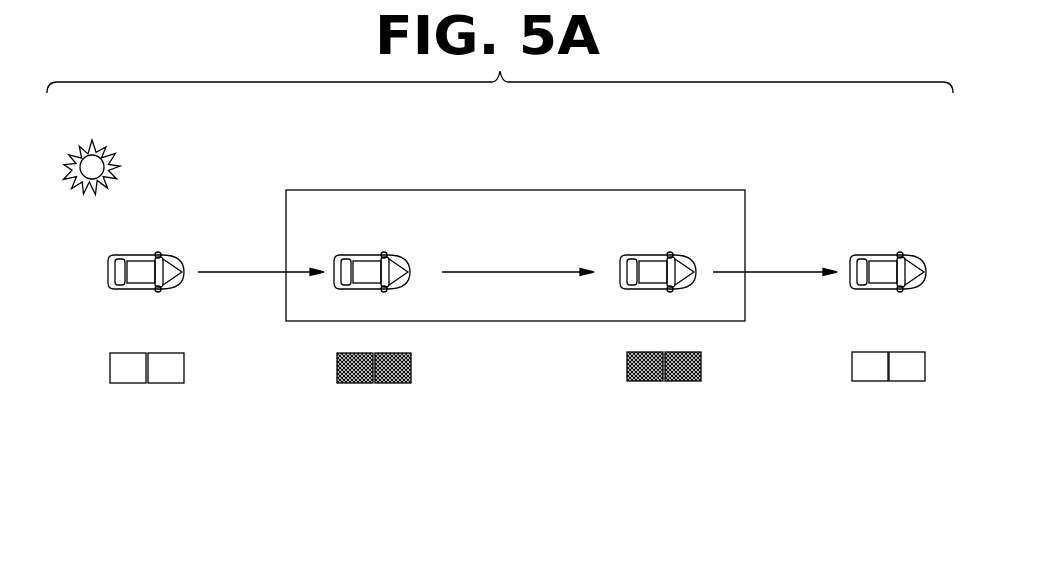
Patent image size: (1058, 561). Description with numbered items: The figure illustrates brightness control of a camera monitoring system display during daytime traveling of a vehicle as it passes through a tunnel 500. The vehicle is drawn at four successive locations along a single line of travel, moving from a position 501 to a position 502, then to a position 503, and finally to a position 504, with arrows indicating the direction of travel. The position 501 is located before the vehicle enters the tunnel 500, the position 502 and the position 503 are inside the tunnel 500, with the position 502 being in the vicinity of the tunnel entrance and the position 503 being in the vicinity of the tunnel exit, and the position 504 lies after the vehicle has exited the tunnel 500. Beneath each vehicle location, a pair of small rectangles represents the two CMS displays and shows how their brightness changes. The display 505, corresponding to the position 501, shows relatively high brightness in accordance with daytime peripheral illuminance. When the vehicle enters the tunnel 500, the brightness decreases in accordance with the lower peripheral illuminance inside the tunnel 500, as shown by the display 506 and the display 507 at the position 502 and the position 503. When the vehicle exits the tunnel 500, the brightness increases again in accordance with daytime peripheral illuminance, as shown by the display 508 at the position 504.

The tunnel 500 is at (625, 189).
The position 501 is at (162, 255).
The position 502 is at (388, 255).
The position 503 is at (675, 255).
The position 504 is at (905, 253).
The display 505 is at (165, 393).
The display 506 is at (392, 393).
The display 507 is at (675, 393).
The display 508 is at (900, 393).